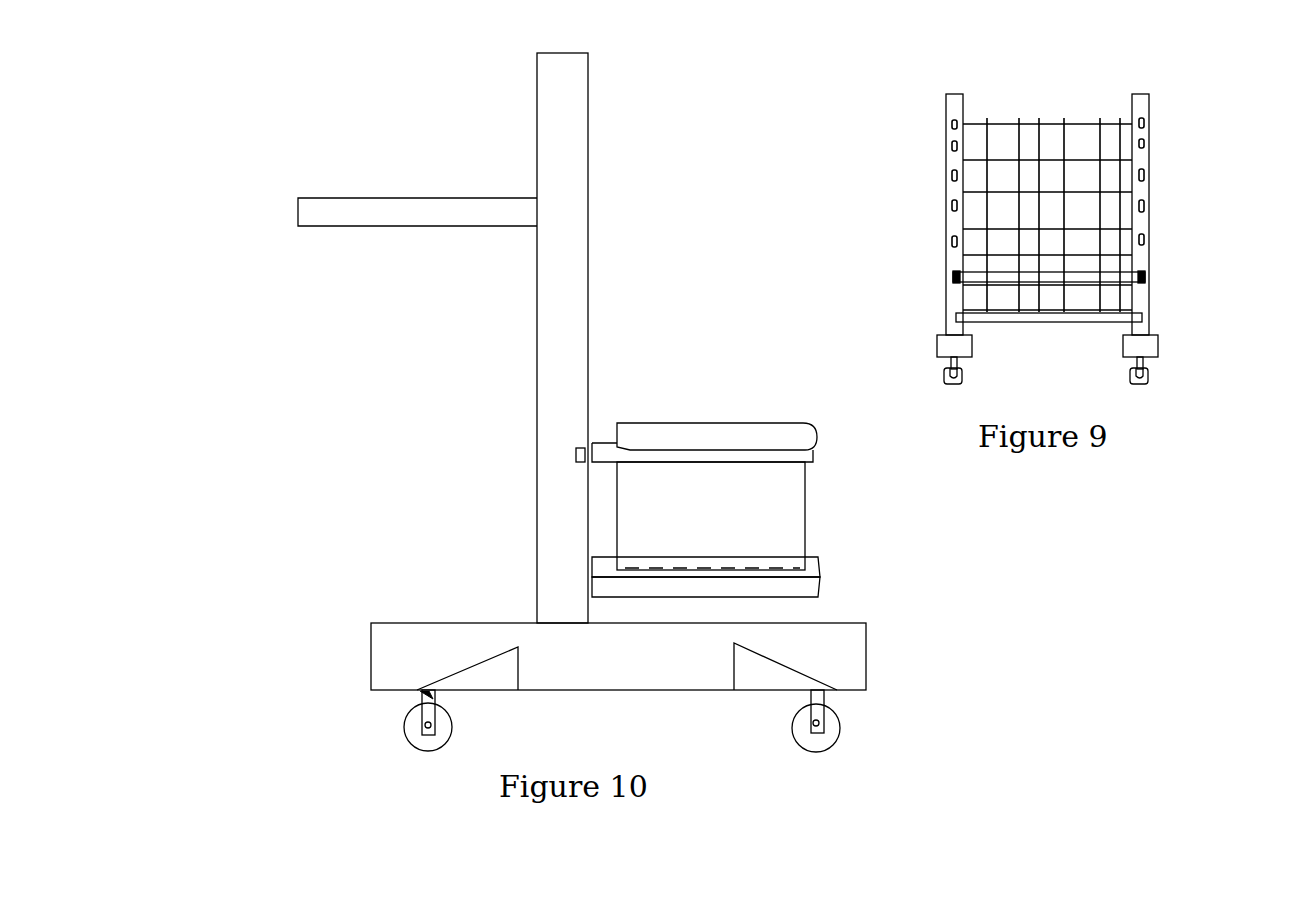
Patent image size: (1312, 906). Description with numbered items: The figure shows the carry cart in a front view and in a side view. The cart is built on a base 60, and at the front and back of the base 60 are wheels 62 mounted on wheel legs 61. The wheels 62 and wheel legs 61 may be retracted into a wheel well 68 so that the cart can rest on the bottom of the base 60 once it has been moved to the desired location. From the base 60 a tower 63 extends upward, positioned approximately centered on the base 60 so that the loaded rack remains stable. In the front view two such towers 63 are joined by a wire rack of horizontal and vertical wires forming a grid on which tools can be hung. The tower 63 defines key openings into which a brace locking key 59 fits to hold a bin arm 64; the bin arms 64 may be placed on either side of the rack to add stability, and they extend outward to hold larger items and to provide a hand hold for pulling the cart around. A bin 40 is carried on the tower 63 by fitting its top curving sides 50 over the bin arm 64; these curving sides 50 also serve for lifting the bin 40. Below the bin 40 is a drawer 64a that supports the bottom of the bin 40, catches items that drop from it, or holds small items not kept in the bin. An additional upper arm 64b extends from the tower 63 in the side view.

In FIG. 10, the bin 40 is at (737, 531).
In FIG. 10, the top curving side 50 is at (660, 435).
In FIG. 10, the brace locking key 59 is at (578, 448).
In FIG. 10, the base 60 is at (843, 644).
In FIG. 9, the base 60 is at (1148, 347).
In FIG. 10, the wheel leg 61 is at (424, 692).
In FIG. 10, the wheel 62 is at (420, 741).
In FIG. 9, the wheel 62 is at (1143, 175).
In FIG. 10, the tower 63 is at (560, 88).
In FIG. 9, the tower 63 is at (1140, 103).
In FIG. 10, the bin arm 64 is at (808, 455).
In FIG. 9, the bin arm 64 is at (1135, 278).
In FIG. 10, the drawer 64a is at (820, 570).
In FIG. 10, the upper arm 64b is at (327, 211).
In FIG. 10, the wheel well 68 is at (488, 679).